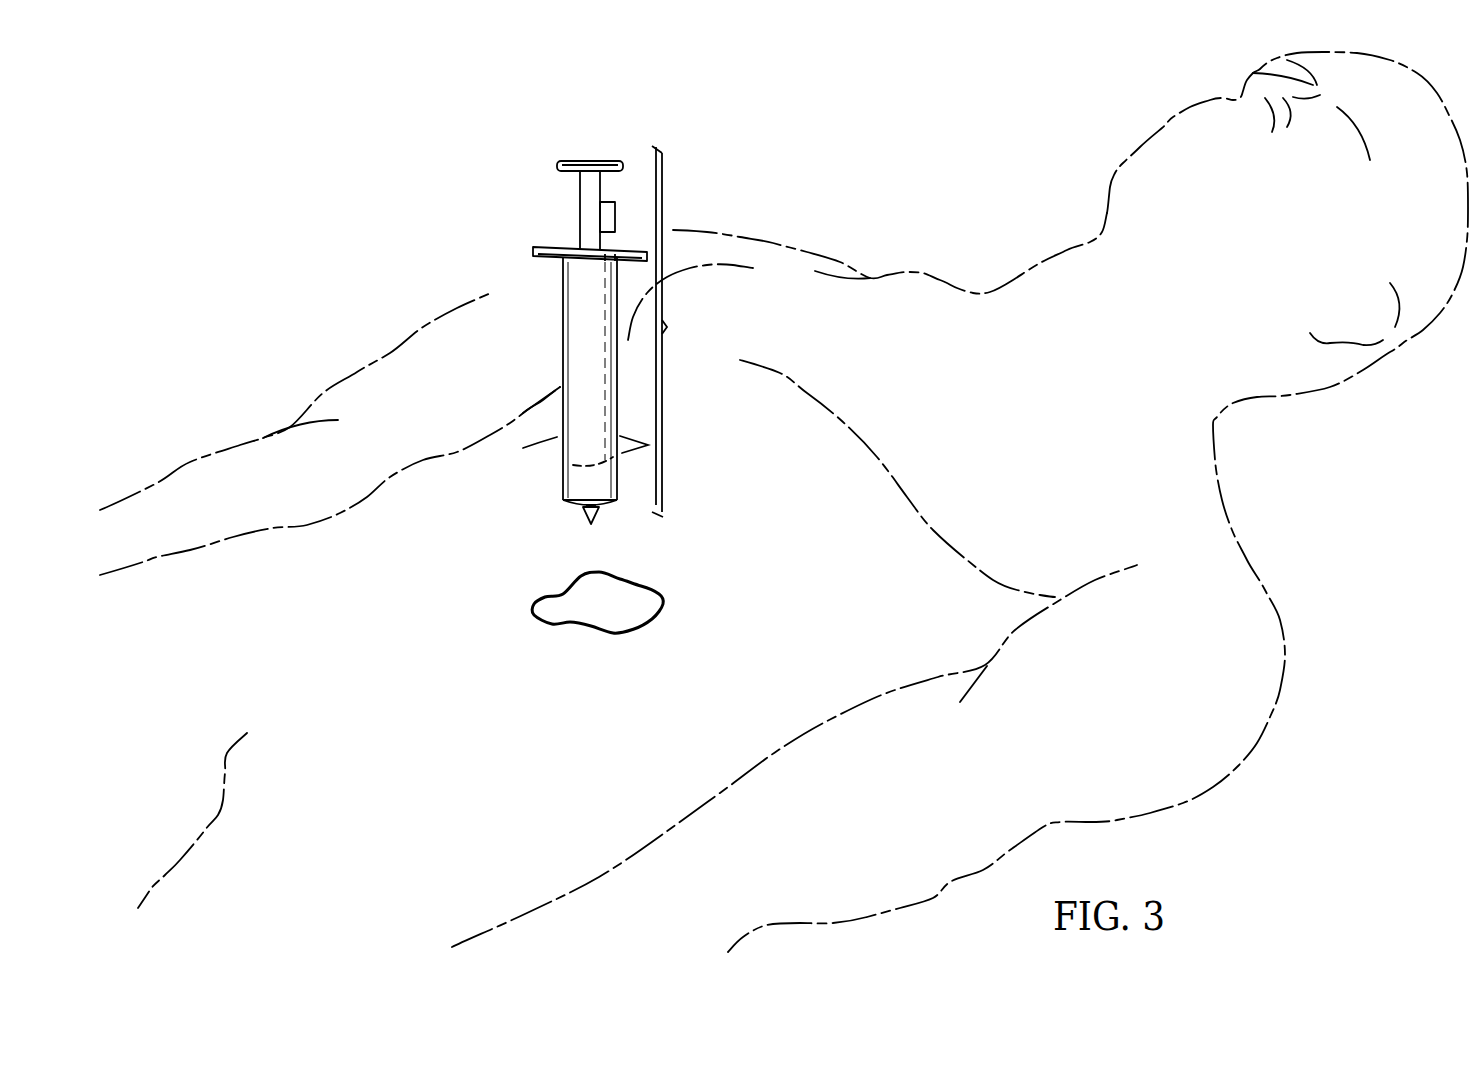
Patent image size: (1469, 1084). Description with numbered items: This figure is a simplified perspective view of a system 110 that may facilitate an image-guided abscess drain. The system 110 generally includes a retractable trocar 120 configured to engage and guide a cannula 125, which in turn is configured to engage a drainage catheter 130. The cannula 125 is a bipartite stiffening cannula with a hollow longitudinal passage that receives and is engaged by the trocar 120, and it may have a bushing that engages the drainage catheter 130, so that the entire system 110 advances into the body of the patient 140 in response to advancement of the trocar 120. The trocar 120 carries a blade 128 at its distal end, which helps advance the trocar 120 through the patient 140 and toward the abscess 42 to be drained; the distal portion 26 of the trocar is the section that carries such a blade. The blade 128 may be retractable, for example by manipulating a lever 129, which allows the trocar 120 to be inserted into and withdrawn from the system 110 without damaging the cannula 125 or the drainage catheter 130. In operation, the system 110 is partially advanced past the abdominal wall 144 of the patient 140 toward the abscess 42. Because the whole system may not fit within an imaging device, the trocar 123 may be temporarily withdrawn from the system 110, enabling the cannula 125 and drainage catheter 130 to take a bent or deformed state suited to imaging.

The system 110 is at (452, 212).
The trocar 123 is at (557, 164).
The lever 129 is at (617, 218).
The cannula 125 is at (577, 297).
The drainage catheter 130 is at (563, 355).
The distal portion 26 is at (560, 388).
The abdominal wall 144 is at (557, 437).
The blade 128 is at (597, 522).
The retractable trocar 120 is at (686, 331).
The patient 140 is at (958, 182).
The abscess 42 is at (527, 611).